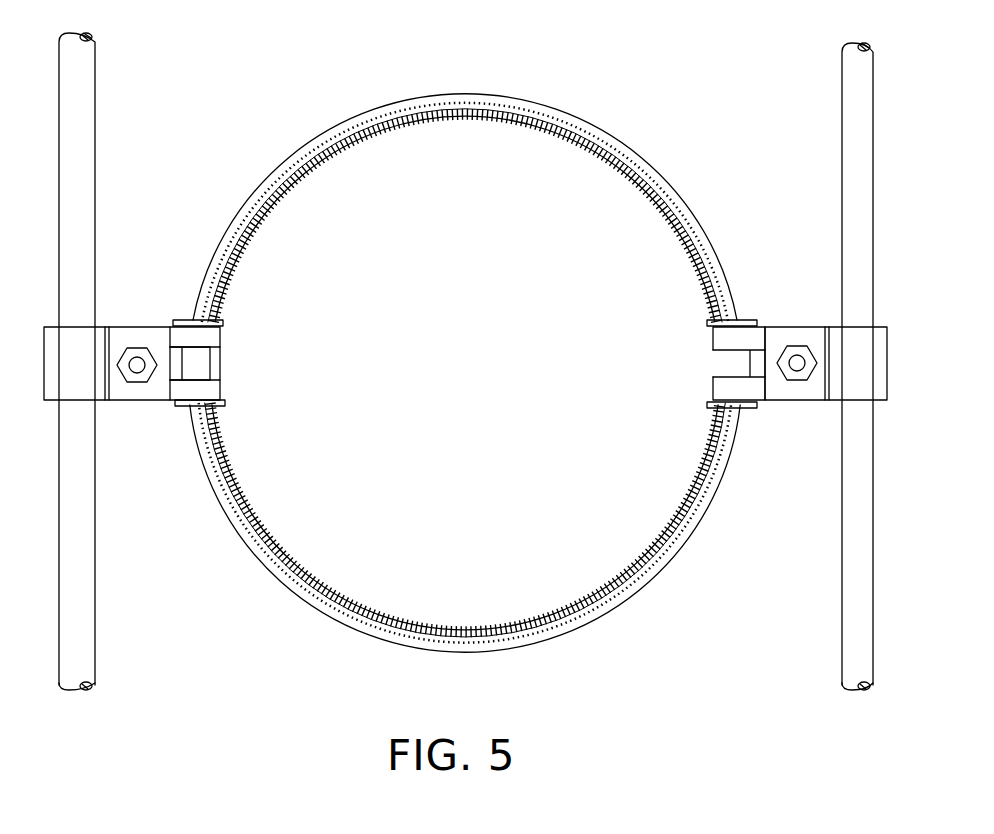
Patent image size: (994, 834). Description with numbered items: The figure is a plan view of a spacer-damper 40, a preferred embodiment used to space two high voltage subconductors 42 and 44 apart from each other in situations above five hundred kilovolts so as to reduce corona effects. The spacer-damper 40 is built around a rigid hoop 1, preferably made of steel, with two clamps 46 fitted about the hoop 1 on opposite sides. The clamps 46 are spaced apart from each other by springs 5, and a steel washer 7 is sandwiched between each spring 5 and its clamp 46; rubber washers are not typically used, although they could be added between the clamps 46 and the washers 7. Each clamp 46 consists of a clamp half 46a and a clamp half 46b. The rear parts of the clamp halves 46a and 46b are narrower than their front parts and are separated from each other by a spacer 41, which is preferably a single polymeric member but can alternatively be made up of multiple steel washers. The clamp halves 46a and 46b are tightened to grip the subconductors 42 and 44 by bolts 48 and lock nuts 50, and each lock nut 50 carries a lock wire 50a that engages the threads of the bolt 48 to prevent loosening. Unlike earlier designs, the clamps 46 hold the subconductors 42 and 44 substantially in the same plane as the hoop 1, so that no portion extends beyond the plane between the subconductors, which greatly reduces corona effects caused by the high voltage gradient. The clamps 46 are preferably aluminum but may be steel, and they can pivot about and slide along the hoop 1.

The rigid hoop 1 is at (680, 192).
The spring 5 is at (490, 118).
The steel washer 7 is at (185, 319).
The spacer-damper 40 is at (597, 78).
The spacer 41 is at (207, 369).
The subconductor 42 is at (87, 78).
The subconductor 44 is at (852, 85).
The clamp 46 is at (149, 488).
The clamp half 46a is at (227, 340).
The clamp half 46b is at (223, 390).
The bolt 48 is at (137, 372).
The lock nut 50 is at (138, 356).
The lock wire 50a is at (157, 353).